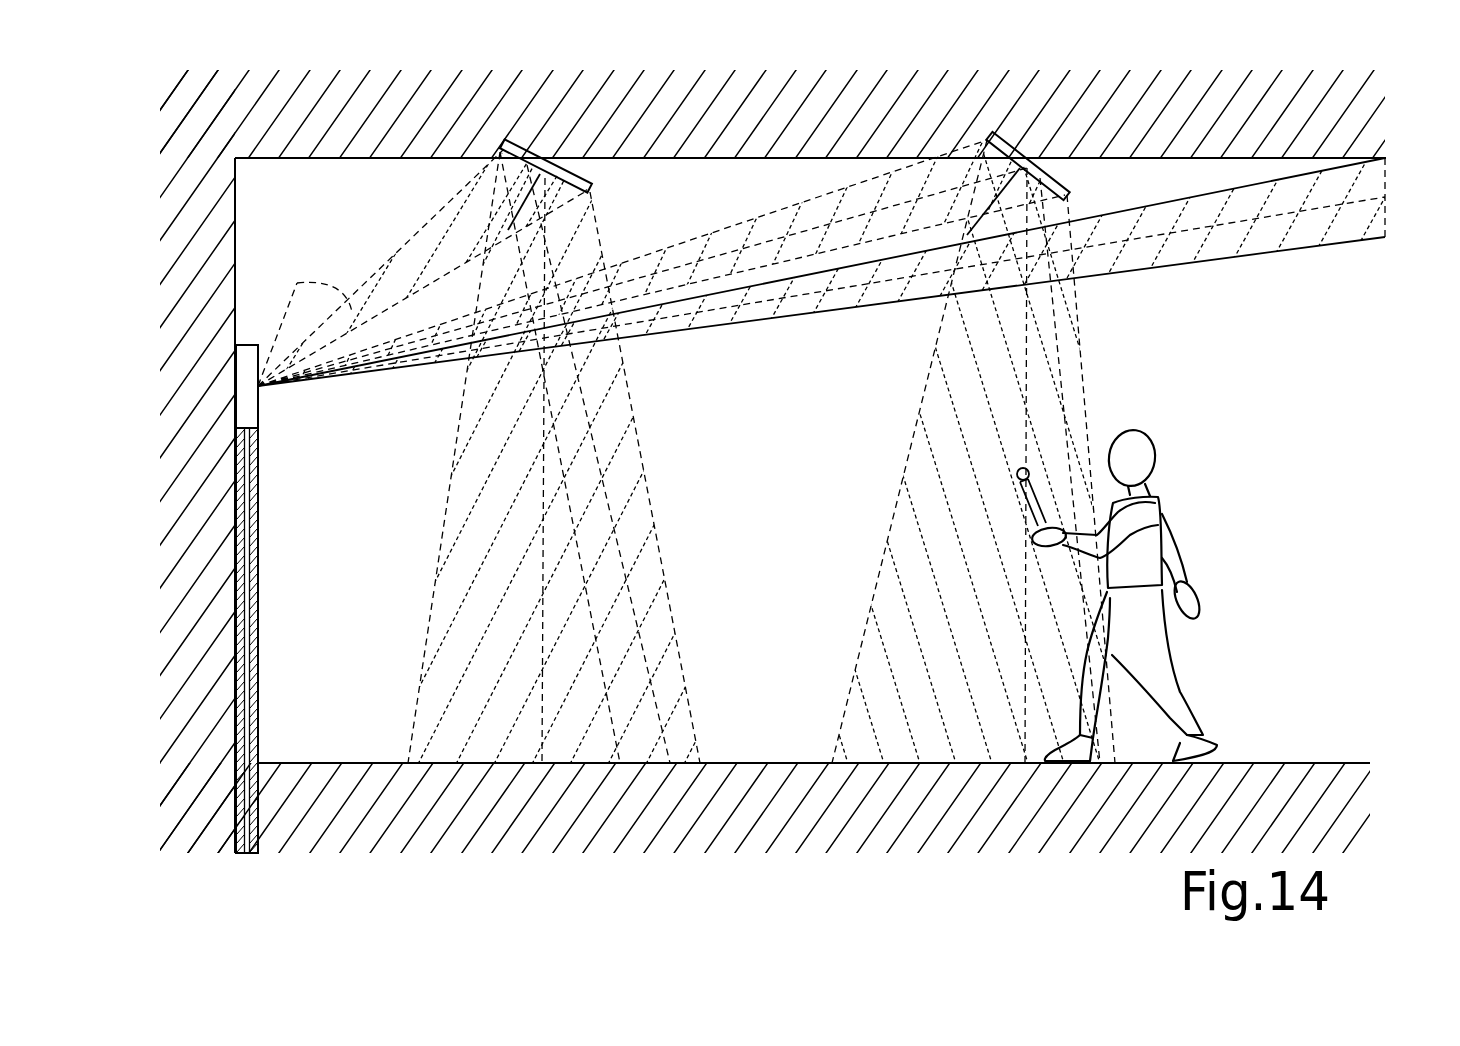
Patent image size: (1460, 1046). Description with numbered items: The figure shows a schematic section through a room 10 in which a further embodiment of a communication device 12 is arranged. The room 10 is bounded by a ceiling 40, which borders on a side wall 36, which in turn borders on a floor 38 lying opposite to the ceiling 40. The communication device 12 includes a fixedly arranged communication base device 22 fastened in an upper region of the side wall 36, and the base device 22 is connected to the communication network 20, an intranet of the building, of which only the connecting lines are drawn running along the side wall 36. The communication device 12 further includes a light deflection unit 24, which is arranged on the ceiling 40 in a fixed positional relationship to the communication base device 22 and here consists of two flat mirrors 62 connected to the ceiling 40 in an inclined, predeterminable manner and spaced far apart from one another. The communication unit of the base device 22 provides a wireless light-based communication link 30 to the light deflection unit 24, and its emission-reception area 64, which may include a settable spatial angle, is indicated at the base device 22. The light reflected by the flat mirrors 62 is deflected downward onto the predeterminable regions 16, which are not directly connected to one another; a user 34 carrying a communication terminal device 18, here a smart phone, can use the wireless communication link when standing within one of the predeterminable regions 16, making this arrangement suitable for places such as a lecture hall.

The room 10 is at (1372, 343).
The communication device 12 is at (818, 110).
The predeterminable region 16 is at (920, 660).
The communication terminal device 18 is at (1018, 508).
The communication network 20 is at (236, 618).
The communication base device 22 is at (210, 394).
The light deflection unit 24 is at (892, 82).
The wireless light-based communication link 30 is at (460, 240).
The user 34 is at (1165, 505).
The side wall 36 is at (188, 738).
The floor 38 is at (1318, 784).
The ceiling 40 is at (1247, 137).
The flat mirrors 62 is at (567, 158).
The emission-reception area 64 is at (277, 332).